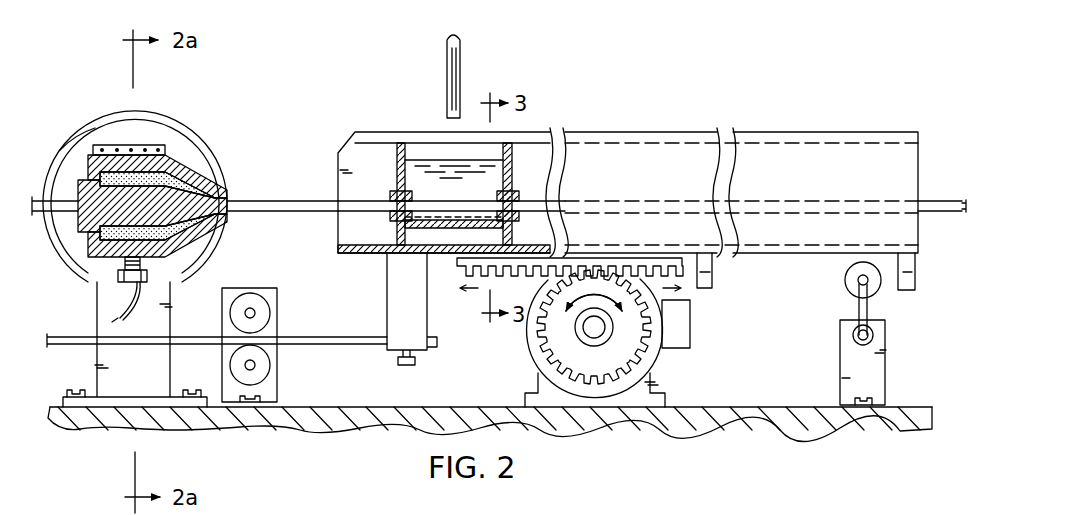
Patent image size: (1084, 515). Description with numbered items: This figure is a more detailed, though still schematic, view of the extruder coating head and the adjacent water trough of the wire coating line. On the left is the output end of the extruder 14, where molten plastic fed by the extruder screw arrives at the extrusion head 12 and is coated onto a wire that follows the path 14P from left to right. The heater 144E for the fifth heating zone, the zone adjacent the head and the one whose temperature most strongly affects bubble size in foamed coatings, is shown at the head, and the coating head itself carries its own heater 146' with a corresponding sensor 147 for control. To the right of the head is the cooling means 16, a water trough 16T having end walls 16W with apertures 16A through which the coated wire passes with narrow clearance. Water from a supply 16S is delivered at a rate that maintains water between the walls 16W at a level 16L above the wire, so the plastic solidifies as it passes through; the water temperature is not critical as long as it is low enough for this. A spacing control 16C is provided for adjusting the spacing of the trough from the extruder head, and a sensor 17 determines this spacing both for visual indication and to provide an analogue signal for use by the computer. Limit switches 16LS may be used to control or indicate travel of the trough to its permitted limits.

The extruder 14 is at (174, 104).
The extrusion head 12 is at (190, 165).
The heater 146' is at (113, 109).
The heater 144E is at (110, 120).
The sensor 147 is at (150, 270).
The wire path 14P is at (303, 185).
The sensor 17 is at (362, 309).
The water trough 16 is at (600, 88).
The end walls 16W is at (396, 172).
The water level 16L is at (500, 160).
The apertures 16A is at (520, 190).
The water trough 16T is at (440, 228).
The water supply 16S is at (446, 55).
The spacing control 16C is at (690, 321).
The limit switches 16LS is at (855, 310).